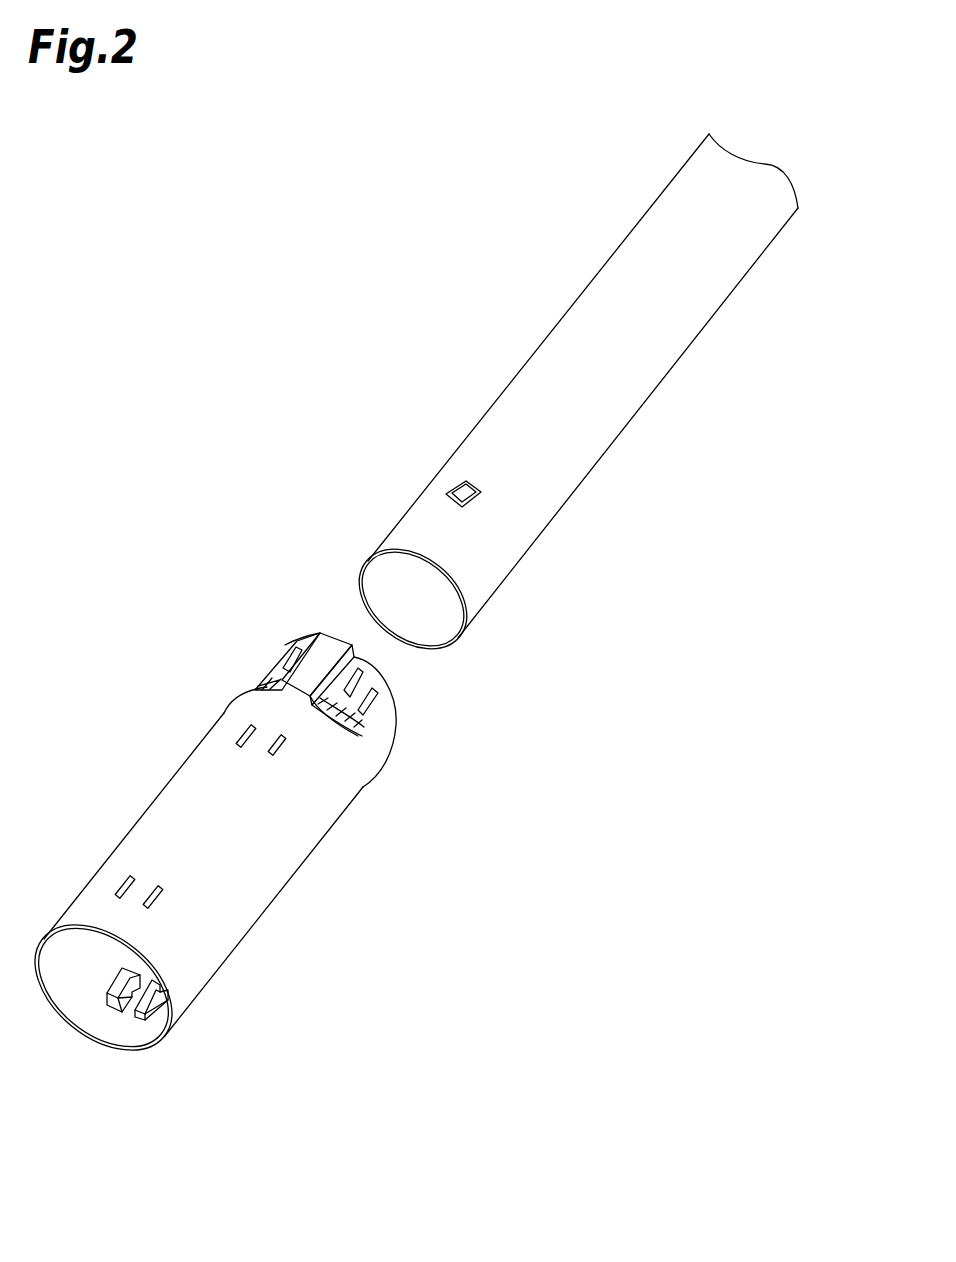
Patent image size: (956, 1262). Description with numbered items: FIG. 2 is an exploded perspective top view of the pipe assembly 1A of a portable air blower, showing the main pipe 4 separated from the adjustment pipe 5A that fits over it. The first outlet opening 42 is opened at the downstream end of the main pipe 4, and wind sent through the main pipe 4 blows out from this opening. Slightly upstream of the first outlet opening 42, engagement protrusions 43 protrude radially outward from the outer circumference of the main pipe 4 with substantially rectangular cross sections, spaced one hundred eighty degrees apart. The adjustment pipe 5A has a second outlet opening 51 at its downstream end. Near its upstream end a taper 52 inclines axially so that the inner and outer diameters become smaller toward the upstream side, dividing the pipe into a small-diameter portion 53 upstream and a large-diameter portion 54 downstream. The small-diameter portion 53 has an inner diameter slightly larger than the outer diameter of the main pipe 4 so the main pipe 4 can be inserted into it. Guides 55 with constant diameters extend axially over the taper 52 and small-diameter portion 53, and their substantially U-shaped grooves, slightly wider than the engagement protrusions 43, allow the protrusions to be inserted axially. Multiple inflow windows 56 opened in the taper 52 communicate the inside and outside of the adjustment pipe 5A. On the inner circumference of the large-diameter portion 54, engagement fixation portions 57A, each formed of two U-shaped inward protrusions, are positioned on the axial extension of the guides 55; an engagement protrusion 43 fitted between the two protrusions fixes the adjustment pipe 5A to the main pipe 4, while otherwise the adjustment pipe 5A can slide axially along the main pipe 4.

The connector assembly 1A is at (229, 332).
The main pipe 4 is at (644, 368).
The first outlet opening 42 is at (408, 641).
The engagement protrusion 43 is at (449, 486).
The adjustment pipe 5A is at (316, 1026).
The second outlet opening 51 is at (43, 965).
The taper 52 is at (348, 717).
The small-diameter portion 53 is at (380, 715).
The large-diameter portion 54 is at (271, 883).
The guide 55 is at (335, 647).
The inflow window 56 is at (355, 733).
The engagement fixation portion 57A is at (124, 1032).